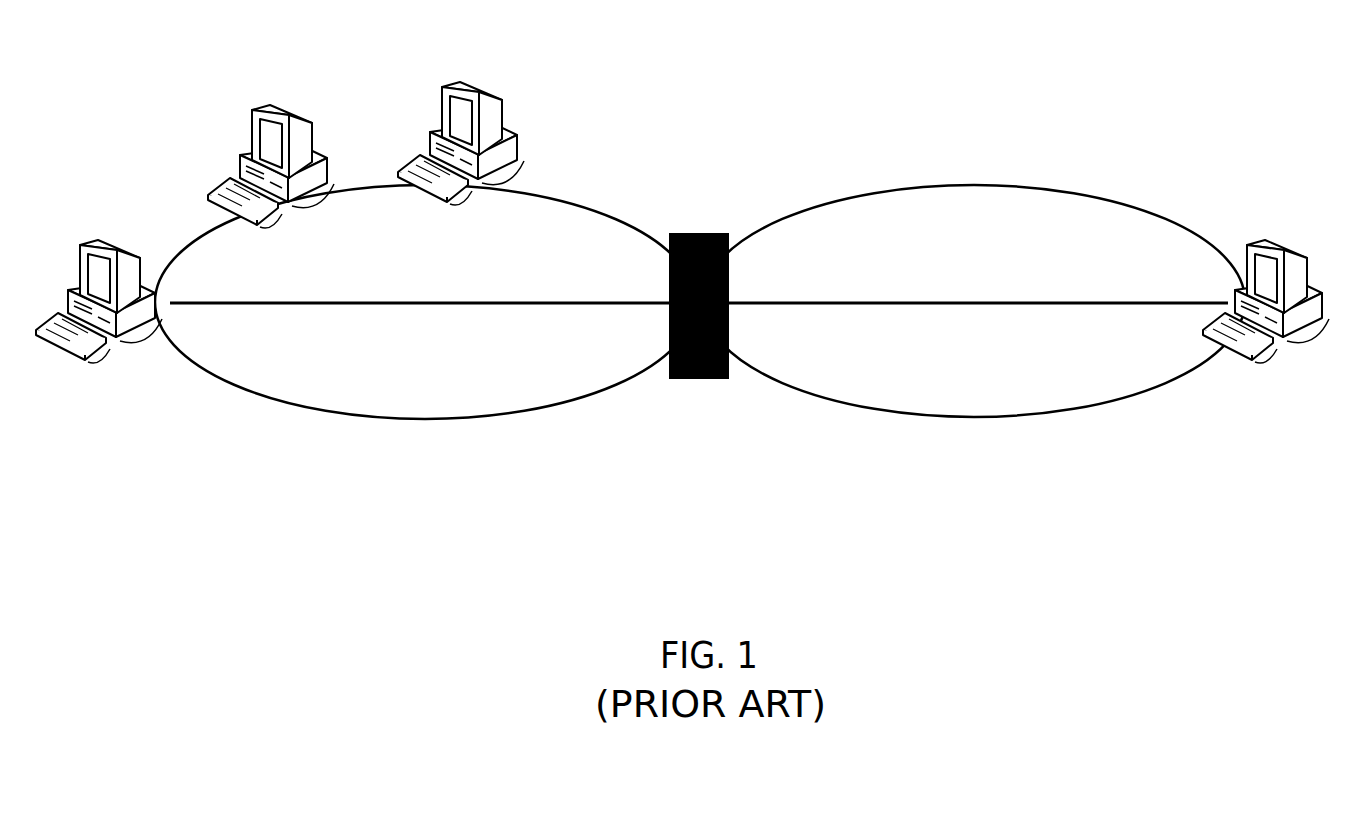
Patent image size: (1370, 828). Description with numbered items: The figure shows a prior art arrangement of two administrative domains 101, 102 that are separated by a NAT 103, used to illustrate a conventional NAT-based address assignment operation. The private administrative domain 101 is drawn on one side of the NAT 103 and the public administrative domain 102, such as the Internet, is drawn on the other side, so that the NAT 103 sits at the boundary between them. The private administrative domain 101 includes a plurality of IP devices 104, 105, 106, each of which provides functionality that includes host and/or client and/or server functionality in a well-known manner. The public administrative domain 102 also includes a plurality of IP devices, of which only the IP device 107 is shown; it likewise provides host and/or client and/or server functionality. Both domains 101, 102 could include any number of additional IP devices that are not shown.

The private administrative domain 101 is at (374, 389).
The public administrative domain 102 is at (938, 379).
The NAT 103 is at (707, 379).
The IP device 104 is at (117, 340).
The IP device 105 is at (302, 113).
The IP device 106 is at (505, 103).
The IP device 107 is at (1277, 347).